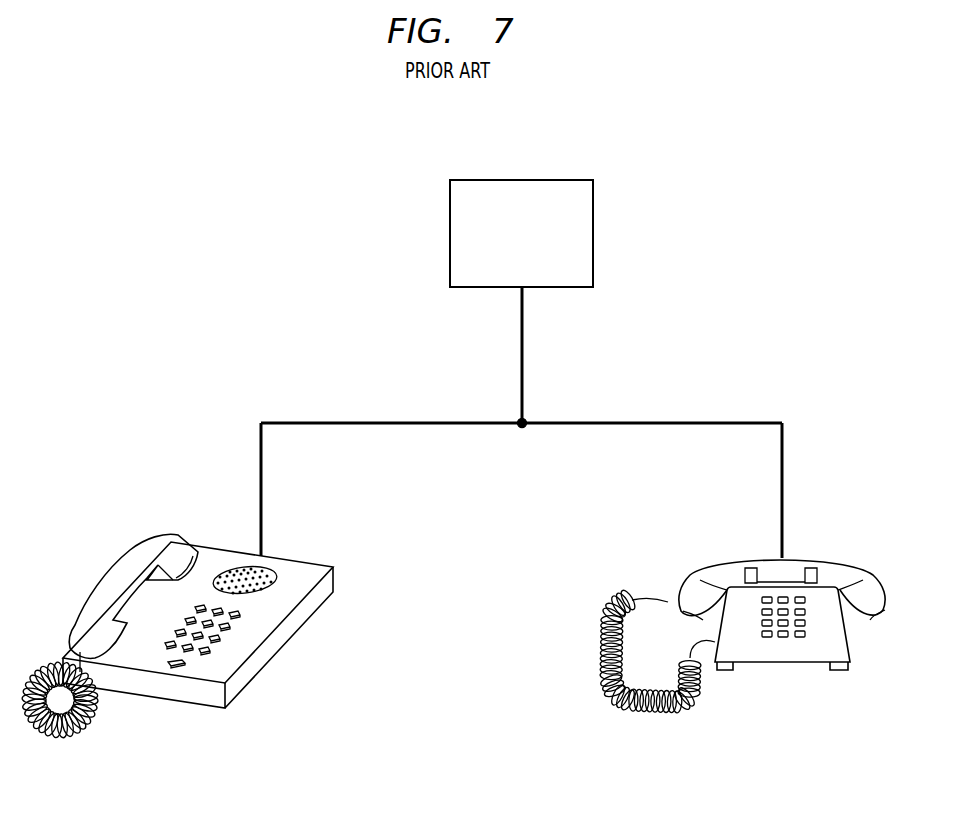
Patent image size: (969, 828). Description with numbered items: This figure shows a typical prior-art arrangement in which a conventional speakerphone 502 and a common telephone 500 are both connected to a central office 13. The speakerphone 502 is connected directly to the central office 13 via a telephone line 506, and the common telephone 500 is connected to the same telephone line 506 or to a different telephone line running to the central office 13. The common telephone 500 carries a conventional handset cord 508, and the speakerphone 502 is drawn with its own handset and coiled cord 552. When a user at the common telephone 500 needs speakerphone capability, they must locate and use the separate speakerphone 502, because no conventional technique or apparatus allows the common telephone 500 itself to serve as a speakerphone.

The central office 13 is at (593, 232).
The telephone line 506 is at (522, 355).
The speakerphone 502 is at (278, 660).
The handset with cord 552 is at (118, 572).
The common telephone 500 is at (783, 665).
The handset cord 508 is at (597, 650).